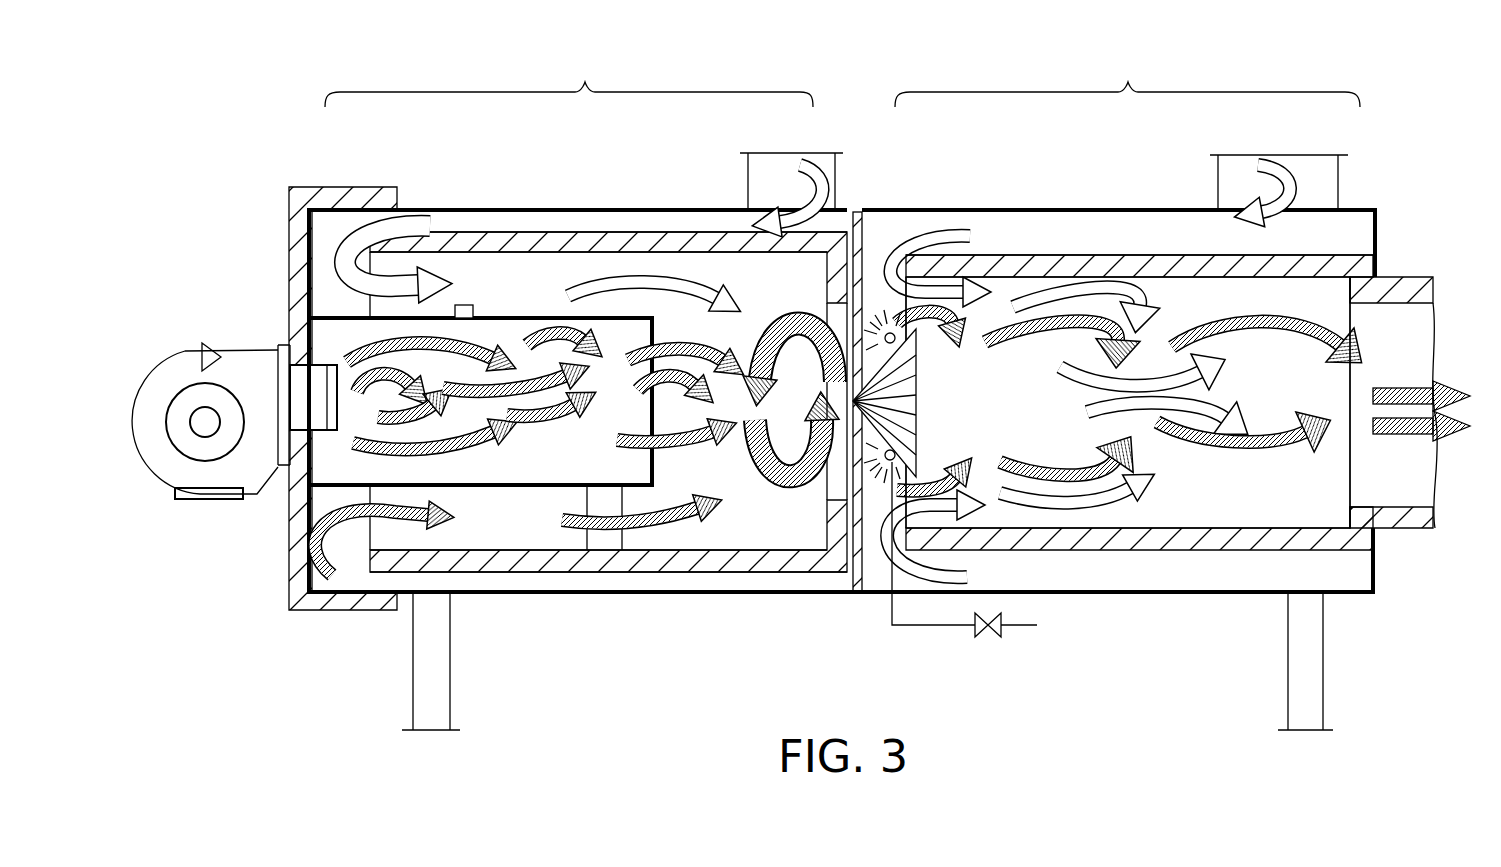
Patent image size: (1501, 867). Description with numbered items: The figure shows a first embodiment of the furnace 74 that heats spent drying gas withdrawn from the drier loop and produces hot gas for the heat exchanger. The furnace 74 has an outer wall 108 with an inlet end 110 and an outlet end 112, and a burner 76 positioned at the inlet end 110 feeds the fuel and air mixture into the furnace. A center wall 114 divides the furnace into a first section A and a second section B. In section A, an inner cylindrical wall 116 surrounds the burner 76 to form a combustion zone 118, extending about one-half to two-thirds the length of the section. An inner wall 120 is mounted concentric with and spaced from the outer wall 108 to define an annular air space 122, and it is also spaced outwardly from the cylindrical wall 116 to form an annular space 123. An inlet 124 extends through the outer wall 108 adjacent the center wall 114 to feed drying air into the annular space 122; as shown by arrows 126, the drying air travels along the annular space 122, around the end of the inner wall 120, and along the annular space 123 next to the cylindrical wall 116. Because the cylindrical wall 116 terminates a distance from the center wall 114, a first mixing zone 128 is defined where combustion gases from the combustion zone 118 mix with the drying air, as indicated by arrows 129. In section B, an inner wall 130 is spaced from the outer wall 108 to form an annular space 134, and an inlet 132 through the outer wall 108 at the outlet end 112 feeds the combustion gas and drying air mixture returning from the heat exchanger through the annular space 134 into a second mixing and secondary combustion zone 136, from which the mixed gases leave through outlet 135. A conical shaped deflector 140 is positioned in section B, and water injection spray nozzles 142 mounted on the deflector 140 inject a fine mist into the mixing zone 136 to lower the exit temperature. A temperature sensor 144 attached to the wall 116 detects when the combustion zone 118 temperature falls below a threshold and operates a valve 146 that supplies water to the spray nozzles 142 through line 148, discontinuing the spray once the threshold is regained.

The furnace 74 is at (848, 76).
The burner 76 is at (187, 348).
The outer wall 108 is at (617, 210).
The inlet end 110 is at (286, 216).
The outlet end 112 is at (1382, 236).
The center wall 114 is at (858, 234).
The inner cylindrical wall 116 is at (326, 492).
The combustion zone 118 is at (518, 455).
The inner wall 120 is at (434, 240).
The annular air space 122 is at (634, 222).
The annular space 123 is at (530, 290).
The inlet 124 is at (849, 168).
The arrows 126 is at (462, 272).
The first mixing zone 128 is at (792, 380).
The arrows 129 is at (756, 342).
The inner wall 130 is at (1005, 255).
The inlet 132 is at (1340, 168).
The annular space 134 is at (1070, 226).
The outlet 135 is at (1420, 278).
The second mixing and secondary combustion zone 136 is at (1308, 505).
The conical shaped deflector 140 is at (916, 405).
The water injection spray nozzles 142 is at (889, 328).
The temperature sensor 144 is at (466, 305).
The valve 146 is at (995, 637).
The line 148 is at (940, 627).